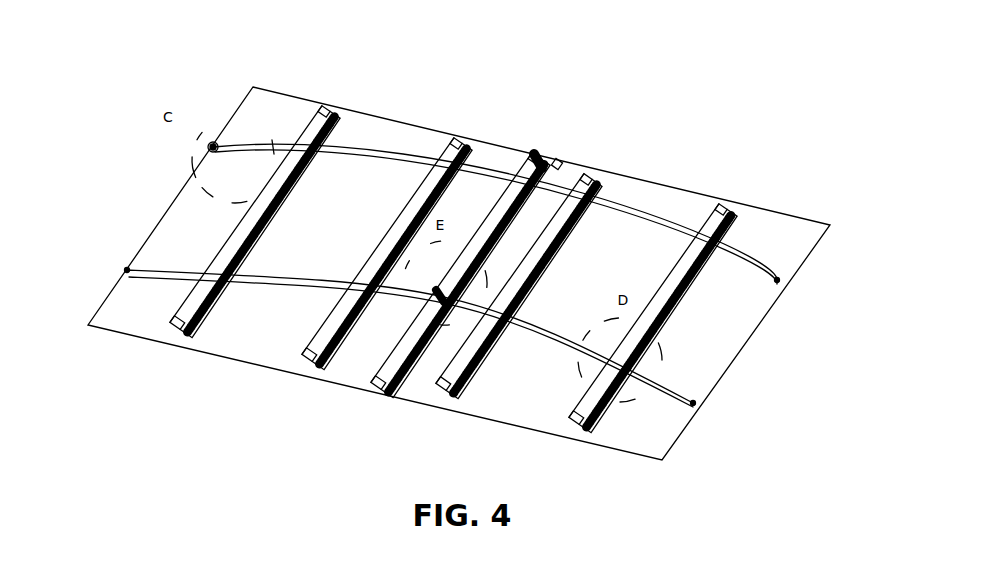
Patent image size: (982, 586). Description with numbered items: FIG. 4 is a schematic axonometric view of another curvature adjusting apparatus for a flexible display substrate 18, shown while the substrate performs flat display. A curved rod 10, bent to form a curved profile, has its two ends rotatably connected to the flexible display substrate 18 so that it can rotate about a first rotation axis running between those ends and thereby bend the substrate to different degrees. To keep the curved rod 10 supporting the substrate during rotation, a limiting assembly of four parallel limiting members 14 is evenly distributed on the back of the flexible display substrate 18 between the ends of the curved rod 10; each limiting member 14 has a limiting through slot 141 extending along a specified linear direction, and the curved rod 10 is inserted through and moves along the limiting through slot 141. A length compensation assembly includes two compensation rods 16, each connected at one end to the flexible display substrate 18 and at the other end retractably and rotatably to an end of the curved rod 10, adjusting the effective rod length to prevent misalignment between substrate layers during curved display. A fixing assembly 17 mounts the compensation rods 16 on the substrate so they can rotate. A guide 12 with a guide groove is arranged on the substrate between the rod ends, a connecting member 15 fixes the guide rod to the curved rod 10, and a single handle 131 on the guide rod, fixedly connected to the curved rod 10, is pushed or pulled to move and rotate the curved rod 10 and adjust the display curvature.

The curved rod 10 is at (371, 152).
The guide 12 is at (543, 156).
The limiting member 14 is at (461, 143).
The connecting member 15 is at (560, 163).
The compensation rod 16 is at (212, 148).
The fixing assembly 17 is at (213, 142).
The flexible display substrate 18 is at (768, 240).
The handle 131 is at (492, 192).
The limiting through slot 141 is at (338, 110).